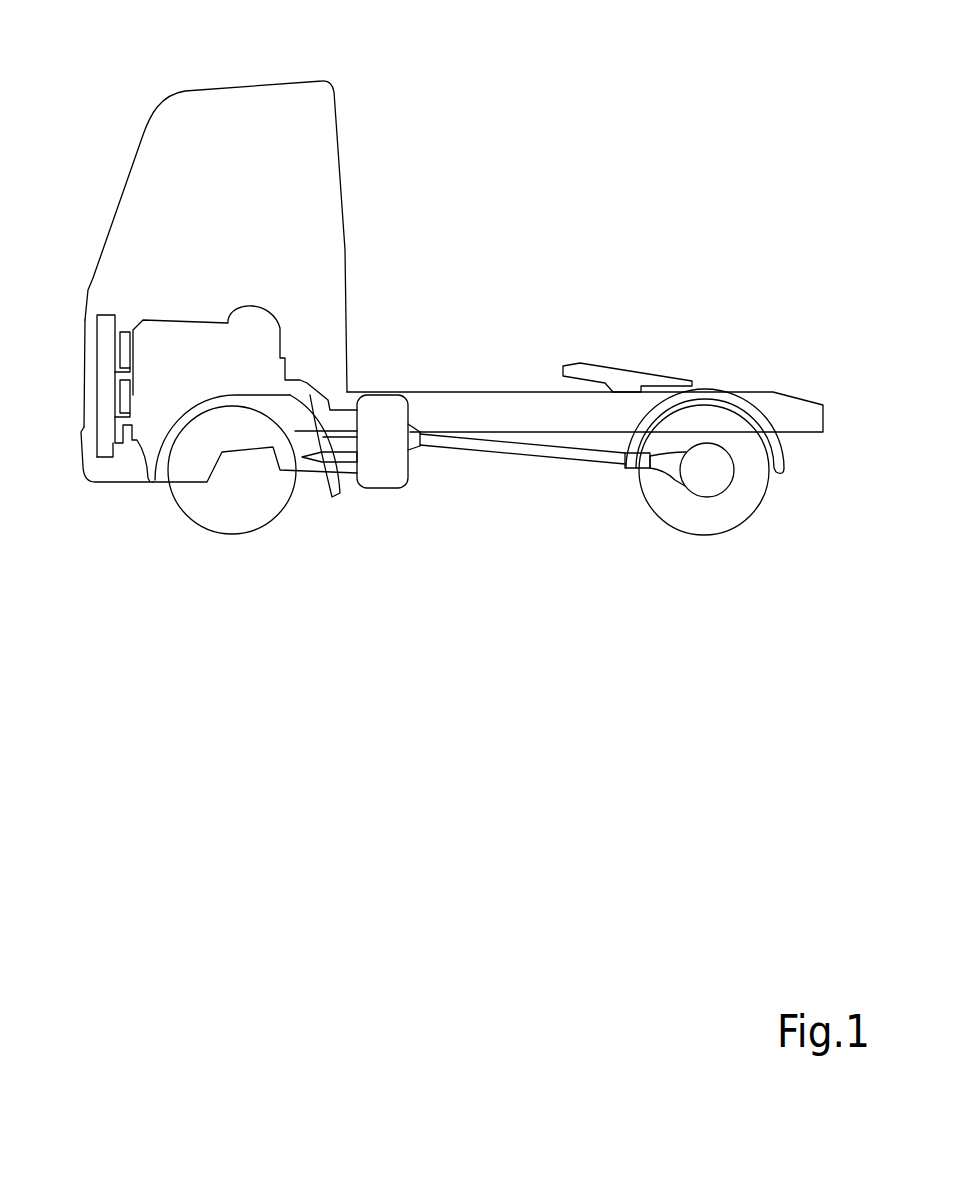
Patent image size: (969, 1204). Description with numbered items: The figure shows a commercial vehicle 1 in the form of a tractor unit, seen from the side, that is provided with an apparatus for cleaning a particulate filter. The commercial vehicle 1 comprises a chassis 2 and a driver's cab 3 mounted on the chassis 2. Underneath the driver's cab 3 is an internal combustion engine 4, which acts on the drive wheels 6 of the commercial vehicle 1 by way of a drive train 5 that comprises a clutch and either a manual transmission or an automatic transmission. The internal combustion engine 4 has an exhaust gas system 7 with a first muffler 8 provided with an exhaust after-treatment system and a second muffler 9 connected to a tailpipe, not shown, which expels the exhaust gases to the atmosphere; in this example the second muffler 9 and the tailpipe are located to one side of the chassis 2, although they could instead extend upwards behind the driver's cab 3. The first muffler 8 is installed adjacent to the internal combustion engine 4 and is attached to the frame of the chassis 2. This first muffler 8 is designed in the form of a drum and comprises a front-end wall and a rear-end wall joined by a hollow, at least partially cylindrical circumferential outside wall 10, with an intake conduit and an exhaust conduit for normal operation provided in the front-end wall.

The commercial vehicle 1 is at (440, 334).
The chassis 2 is at (480, 390).
The driver's cab 3 is at (123, 193).
The internal combustion engine 4 is at (152, 428).
The drive train 5 is at (547, 453).
The drive wheels 6 is at (223, 523).
The exhaust gas system 7 is at (313, 467).
The first muffler 8 is at (380, 475).
The second muffler 9 is at (405, 495).
The circumferential outside wall 10 is at (422, 477).